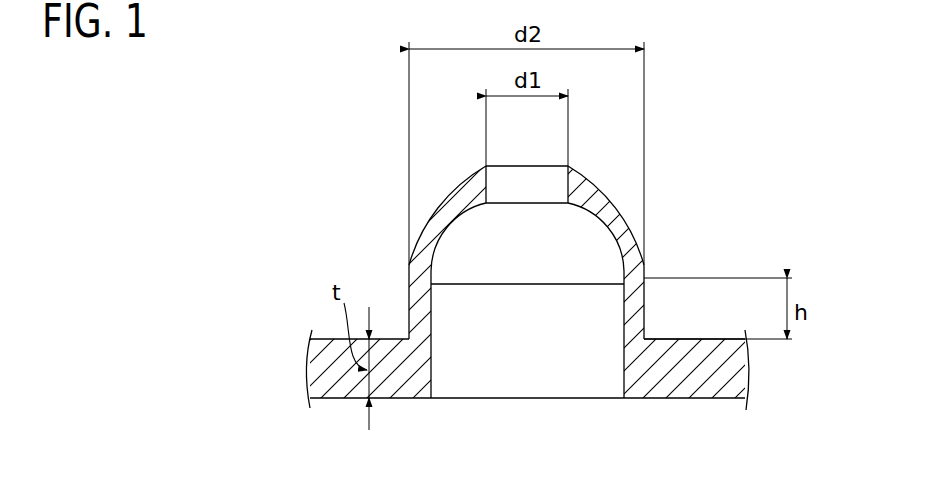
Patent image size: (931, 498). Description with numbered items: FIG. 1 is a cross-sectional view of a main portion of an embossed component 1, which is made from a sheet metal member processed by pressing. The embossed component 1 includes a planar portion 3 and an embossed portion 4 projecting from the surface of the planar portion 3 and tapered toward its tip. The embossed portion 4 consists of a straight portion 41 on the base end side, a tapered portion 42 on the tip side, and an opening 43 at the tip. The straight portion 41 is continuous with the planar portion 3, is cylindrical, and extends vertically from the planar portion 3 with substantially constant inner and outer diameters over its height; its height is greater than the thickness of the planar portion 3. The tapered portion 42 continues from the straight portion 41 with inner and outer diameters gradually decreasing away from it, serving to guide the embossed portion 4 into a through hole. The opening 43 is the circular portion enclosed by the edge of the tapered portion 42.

The embossed component 1 is at (761, 67).
The planar portion 3 is at (702, 377).
The embossed portion 4 is at (427, 203).
The straight portion 41 is at (644, 315).
The tapered portion 42 is at (610, 203).
The opening 43 is at (488, 182).